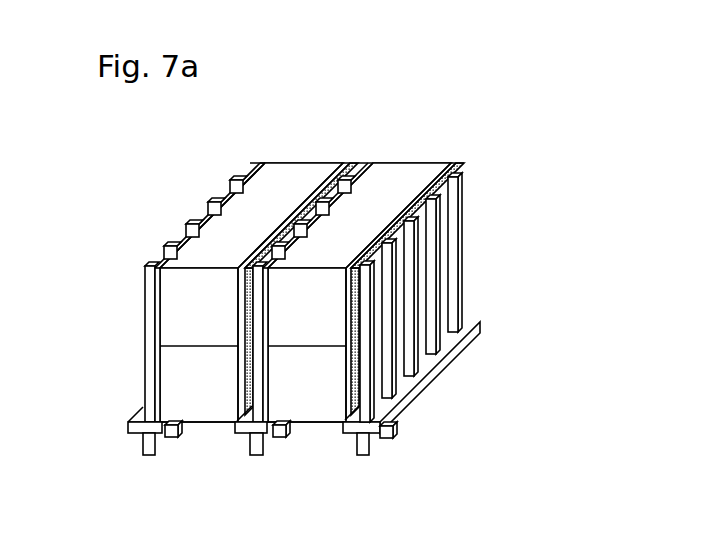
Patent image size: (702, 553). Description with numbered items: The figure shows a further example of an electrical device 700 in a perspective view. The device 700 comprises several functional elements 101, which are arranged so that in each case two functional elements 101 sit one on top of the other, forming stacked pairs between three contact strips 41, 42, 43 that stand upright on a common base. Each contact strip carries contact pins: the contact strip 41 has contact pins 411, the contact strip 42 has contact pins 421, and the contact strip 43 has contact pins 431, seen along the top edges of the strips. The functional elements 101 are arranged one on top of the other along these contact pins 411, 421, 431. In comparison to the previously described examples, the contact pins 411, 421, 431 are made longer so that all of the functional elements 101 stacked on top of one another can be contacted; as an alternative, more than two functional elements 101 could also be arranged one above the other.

The electrical device 700 is at (148, 182).
The functional element 101 is at (197, 297).
The contact strip 41 is at (157, 428).
The contact pin 411 is at (243, 180).
The contact strip 42 is at (262, 428).
The contact pin 421 is at (352, 180).
The contact strip 43 is at (369, 428).
The contact pin 431 is at (457, 188).